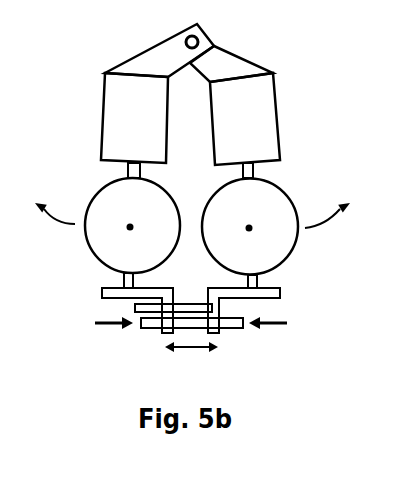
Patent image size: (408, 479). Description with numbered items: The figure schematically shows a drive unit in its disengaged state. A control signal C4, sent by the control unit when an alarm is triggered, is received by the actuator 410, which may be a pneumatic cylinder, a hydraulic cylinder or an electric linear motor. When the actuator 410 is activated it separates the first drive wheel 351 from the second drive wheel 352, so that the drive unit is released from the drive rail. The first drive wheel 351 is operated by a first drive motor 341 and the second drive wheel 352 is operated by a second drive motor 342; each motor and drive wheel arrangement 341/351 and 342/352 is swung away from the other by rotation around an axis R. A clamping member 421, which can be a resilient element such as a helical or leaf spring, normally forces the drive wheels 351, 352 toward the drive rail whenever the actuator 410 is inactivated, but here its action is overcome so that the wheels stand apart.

The axis R is at (198, 35).
The first drive motor 341 is at (253, 118).
The second drive motor 342 is at (130, 118).
The first drive wheel 351 is at (255, 205).
The second drive wheel 352 is at (128, 207).
The actuator 410 is at (157, 312).
The clamping member 421 is at (192, 327).
The control signal C4 is at (132, 308).